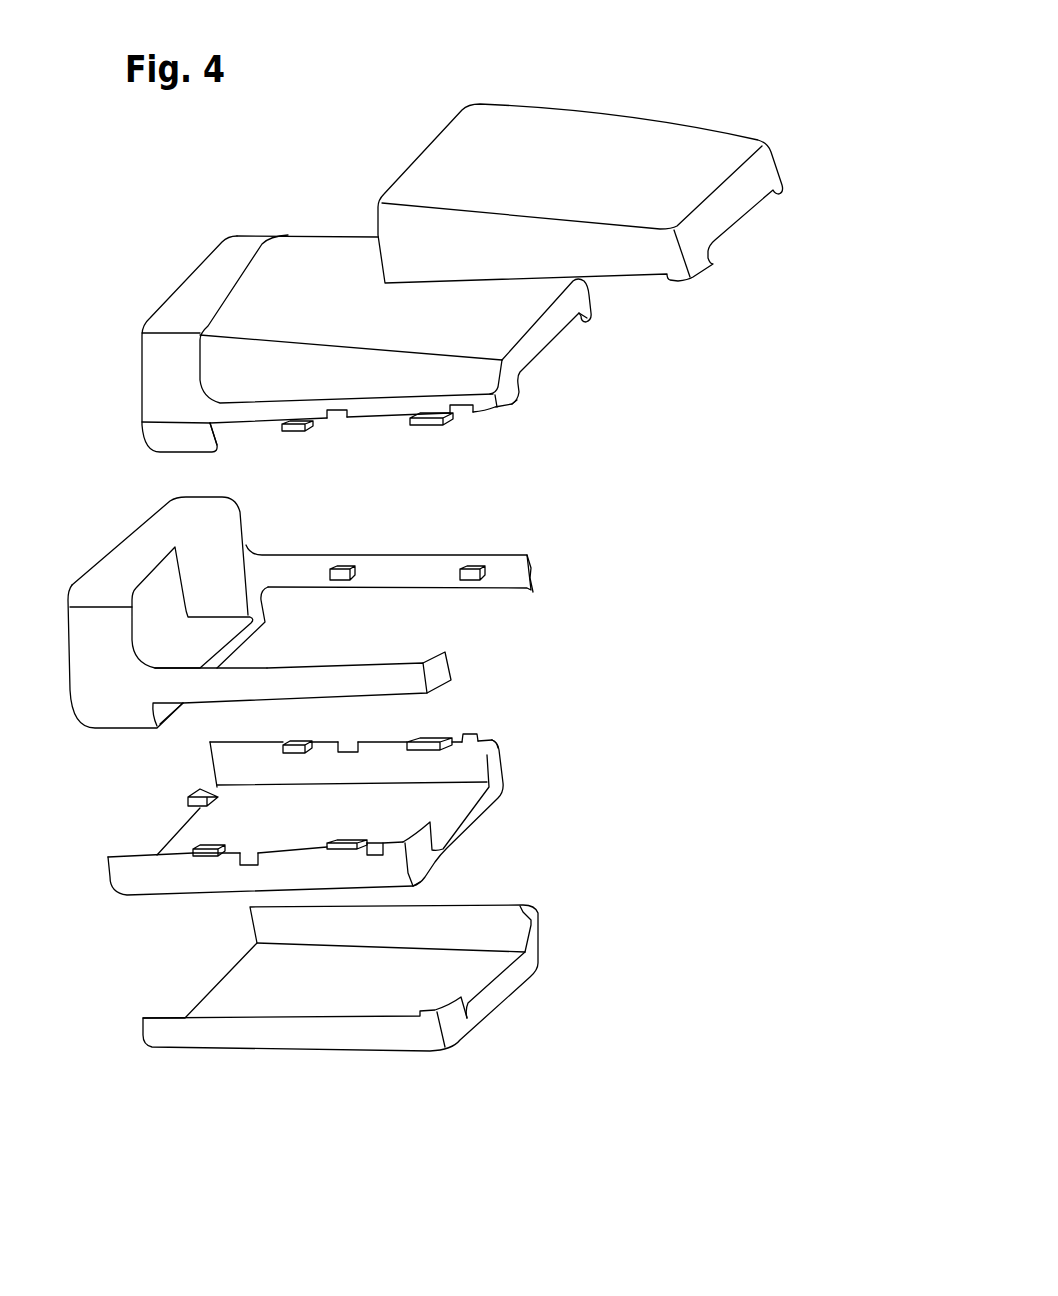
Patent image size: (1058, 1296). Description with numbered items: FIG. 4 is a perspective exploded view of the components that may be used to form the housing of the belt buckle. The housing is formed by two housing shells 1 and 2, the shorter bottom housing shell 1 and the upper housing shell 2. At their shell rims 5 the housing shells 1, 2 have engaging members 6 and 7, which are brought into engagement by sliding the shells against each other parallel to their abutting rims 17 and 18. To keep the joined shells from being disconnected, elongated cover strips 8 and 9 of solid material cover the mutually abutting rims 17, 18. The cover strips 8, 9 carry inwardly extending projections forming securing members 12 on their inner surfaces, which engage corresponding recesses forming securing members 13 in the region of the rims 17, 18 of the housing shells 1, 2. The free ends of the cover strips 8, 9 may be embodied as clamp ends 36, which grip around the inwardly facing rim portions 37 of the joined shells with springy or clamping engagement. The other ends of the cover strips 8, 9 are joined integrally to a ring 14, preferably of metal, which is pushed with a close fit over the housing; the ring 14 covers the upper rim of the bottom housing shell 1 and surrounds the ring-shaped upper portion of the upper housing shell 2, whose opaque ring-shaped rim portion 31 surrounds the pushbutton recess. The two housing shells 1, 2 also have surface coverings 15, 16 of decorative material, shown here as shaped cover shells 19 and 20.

The housing shell 1 is at (448, 817).
The housing shell 2 is at (318, 252).
The shell rim 5 is at (370, 413).
The engaging member 6 is at (300, 740).
The engaging member 7 is at (300, 433).
The cover strip 8 is at (305, 567).
The cover strip 9 is at (277, 677).
The securing member 12 is at (343, 581).
The securing member 13 is at (343, 418).
The ring 14 is at (125, 562).
The surface covering 15 is at (323, 1070).
The surface covering 16 is at (721, 100).
The rim 17 is at (243, 738).
The rim 18 is at (393, 418).
The cover shell 19 is at (375, 1003).
The cover shell 20 is at (593, 176).
The ring-shaped rim portion 31 is at (223, 431).
The clamp end 36 is at (533, 578).
The inwardly facing rim portion 37 is at (588, 318).